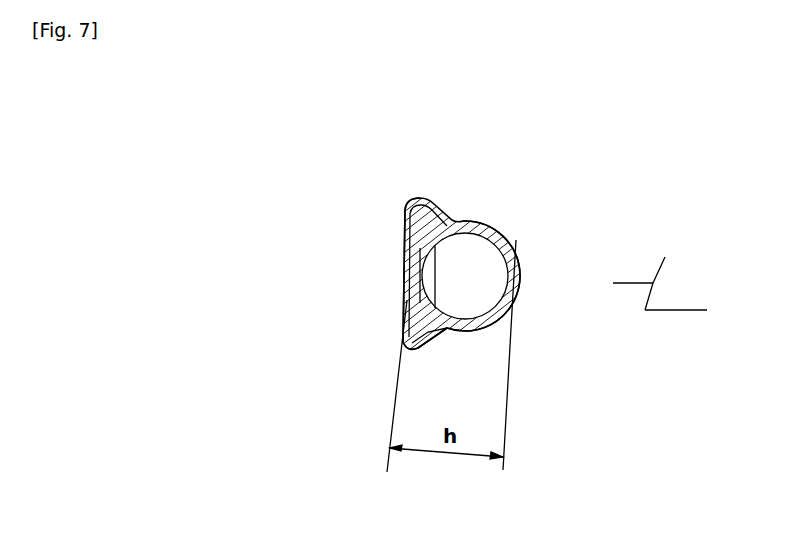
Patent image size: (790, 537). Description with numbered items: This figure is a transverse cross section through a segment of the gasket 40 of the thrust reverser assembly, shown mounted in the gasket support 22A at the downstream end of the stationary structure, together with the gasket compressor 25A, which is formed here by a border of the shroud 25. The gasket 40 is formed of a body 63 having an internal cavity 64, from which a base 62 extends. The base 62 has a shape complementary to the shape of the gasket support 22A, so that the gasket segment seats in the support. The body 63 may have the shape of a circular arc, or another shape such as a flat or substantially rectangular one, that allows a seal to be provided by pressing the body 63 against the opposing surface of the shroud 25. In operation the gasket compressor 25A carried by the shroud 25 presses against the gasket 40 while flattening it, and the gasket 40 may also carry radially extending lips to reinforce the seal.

The gasket 40 is at (522, 196).
The internal cavity 64 is at (478, 278).
The body 63 is at (503, 307).
The base 62 is at (425, 347).
The gasket support 22A is at (402, 268).
The gasket compressor 25A is at (627, 287).
The shroud 25 is at (682, 312).